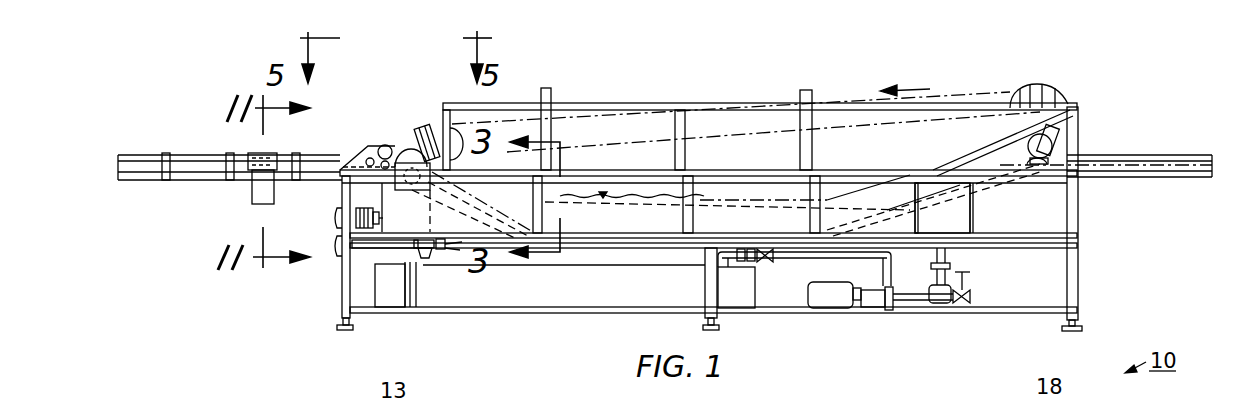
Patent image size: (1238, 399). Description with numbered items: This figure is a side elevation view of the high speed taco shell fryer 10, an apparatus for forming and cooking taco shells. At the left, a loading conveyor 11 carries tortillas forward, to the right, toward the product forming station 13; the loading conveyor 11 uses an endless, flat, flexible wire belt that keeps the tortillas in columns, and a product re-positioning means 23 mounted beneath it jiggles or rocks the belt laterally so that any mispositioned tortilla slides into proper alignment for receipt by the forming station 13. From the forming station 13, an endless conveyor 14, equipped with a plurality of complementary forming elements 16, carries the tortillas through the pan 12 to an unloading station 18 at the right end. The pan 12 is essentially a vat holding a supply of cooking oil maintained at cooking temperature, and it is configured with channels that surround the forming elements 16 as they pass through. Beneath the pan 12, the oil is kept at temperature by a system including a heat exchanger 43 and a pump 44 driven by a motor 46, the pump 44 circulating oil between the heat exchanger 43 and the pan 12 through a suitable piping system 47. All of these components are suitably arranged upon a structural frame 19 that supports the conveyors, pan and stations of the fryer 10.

The high speed taco shell fryer 10 is at (1150, 69).
The loading conveyor 11 is at (186, 188).
The pan 12 is at (982, 211).
The product forming station 13 is at (420, 128).
The endless conveyor 14 is at (969, 86).
The forming element 16 is at (1027, 92).
The unloading station 18 is at (1087, 126).
The structural frame 19 is at (1088, 270).
The product re-positioning means 23 is at (256, 208).
The heat exchanger 43 is at (533, 288).
The pump 44 is at (897, 297).
The motor 46 is at (822, 292).
The piping system 47 is at (812, 258).